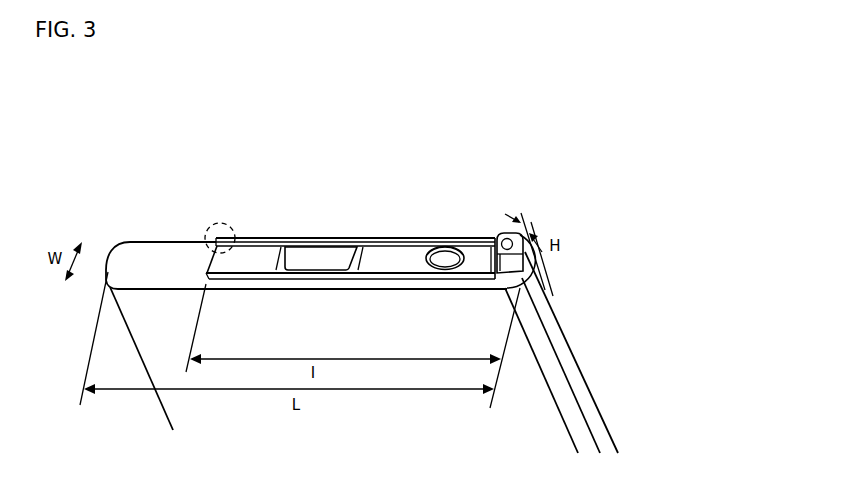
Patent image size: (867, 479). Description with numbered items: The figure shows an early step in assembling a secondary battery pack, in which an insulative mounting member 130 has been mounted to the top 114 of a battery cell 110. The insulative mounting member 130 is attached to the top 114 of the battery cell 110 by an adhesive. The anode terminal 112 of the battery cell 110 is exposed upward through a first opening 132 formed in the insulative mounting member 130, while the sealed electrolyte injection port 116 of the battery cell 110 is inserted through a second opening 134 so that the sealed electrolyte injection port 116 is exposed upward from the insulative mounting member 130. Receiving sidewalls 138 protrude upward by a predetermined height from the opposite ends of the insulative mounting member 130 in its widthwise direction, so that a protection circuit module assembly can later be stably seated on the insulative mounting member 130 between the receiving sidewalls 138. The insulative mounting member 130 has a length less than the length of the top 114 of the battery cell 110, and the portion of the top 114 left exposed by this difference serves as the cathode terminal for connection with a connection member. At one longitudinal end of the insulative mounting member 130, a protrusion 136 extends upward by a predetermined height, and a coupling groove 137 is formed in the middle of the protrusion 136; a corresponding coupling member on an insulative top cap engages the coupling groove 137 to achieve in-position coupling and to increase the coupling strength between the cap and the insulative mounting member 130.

The battery cell 110 is at (594, 385).
The anode terminal 112 is at (318, 256).
The top 114 is at (127, 268).
The sealed electrolyte injection port 116 is at (440, 252).
The insulative mounting member 130 is at (264, 228).
The first opening 132 is at (358, 256).
The second opening 134 is at (461, 246).
The protrusion 136 is at (505, 288).
The coupling groove 137 is at (528, 268).
The receiving sidewalls 138 is at (227, 223).